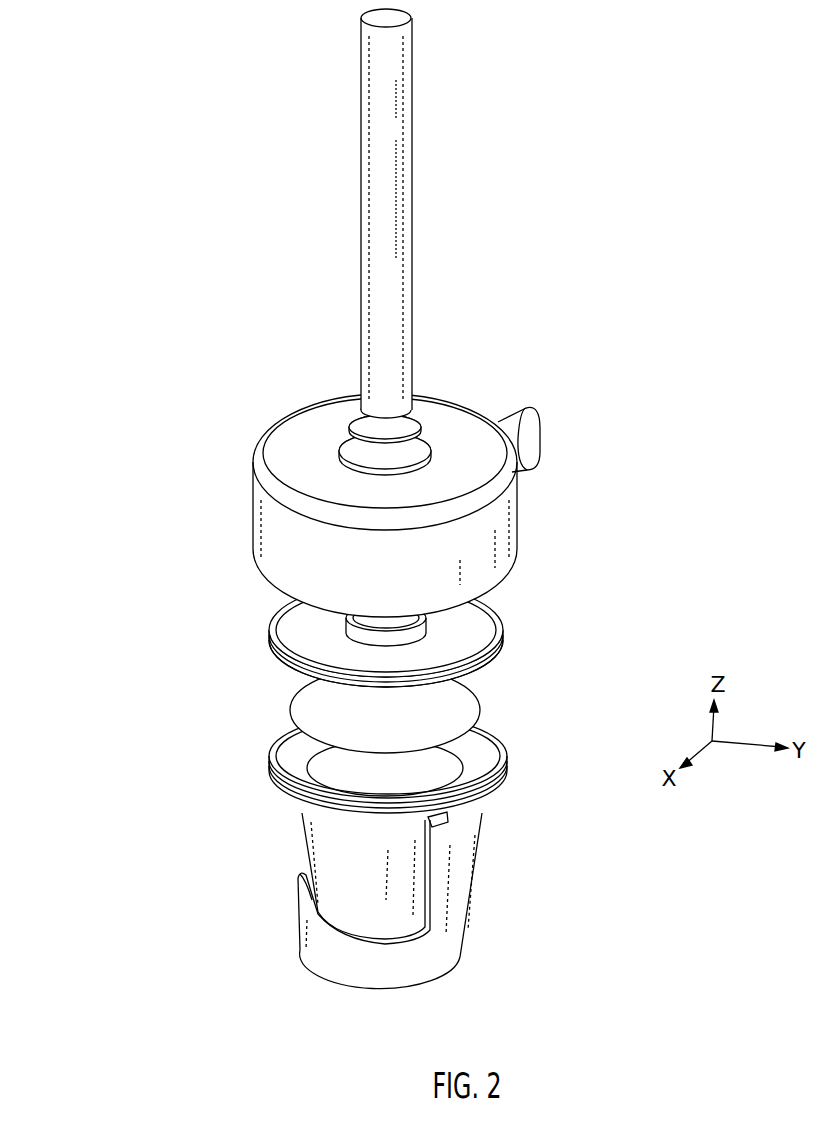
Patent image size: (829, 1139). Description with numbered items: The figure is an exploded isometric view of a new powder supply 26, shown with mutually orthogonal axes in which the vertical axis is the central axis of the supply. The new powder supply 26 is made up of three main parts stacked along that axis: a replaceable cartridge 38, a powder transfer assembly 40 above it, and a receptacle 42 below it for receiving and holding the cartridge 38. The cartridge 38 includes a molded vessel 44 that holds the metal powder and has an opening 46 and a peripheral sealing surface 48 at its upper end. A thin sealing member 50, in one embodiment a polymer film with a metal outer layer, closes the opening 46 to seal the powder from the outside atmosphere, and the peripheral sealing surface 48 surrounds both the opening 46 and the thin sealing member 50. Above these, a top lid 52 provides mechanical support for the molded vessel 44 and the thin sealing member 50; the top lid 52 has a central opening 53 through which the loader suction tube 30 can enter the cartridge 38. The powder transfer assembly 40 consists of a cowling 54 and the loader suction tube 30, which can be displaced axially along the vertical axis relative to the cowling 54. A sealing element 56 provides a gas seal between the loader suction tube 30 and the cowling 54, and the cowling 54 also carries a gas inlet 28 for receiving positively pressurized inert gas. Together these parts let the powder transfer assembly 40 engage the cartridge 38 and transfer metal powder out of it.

The new powder supply 26 is at (122, 100).
The gas inlet 28 is at (526, 442).
The loader suction tube 30 is at (392, 212).
The replaceable cartridge 38 is at (240, 607).
The powder transfer assembly 40 is at (330, 27).
The receptacle 42 is at (463, 873).
The molded vessel 44 is at (322, 858).
The opening 46 is at (447, 757).
The peripheral sealing surface 48 is at (273, 770).
The thin sealing member 50 is at (466, 706).
The top lid 52 is at (478, 612).
The central opening 53 is at (426, 622).
The cowling 54 is at (506, 546).
The sealing element 56 is at (395, 442).